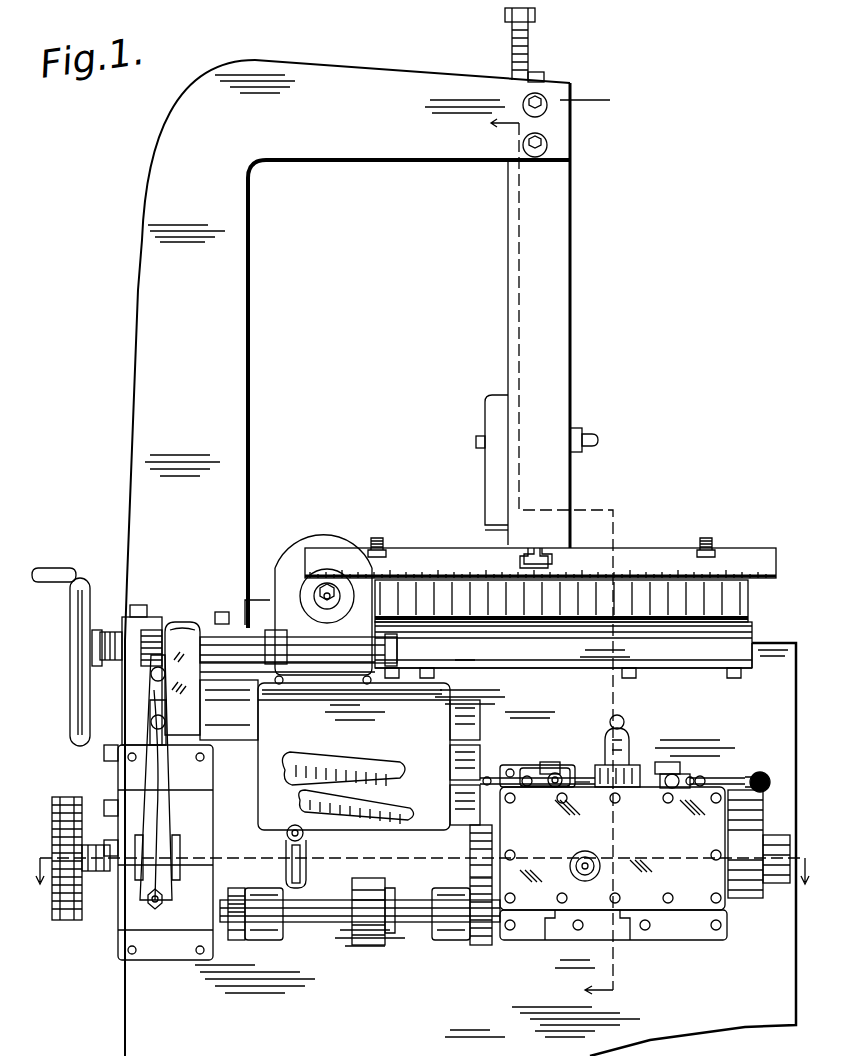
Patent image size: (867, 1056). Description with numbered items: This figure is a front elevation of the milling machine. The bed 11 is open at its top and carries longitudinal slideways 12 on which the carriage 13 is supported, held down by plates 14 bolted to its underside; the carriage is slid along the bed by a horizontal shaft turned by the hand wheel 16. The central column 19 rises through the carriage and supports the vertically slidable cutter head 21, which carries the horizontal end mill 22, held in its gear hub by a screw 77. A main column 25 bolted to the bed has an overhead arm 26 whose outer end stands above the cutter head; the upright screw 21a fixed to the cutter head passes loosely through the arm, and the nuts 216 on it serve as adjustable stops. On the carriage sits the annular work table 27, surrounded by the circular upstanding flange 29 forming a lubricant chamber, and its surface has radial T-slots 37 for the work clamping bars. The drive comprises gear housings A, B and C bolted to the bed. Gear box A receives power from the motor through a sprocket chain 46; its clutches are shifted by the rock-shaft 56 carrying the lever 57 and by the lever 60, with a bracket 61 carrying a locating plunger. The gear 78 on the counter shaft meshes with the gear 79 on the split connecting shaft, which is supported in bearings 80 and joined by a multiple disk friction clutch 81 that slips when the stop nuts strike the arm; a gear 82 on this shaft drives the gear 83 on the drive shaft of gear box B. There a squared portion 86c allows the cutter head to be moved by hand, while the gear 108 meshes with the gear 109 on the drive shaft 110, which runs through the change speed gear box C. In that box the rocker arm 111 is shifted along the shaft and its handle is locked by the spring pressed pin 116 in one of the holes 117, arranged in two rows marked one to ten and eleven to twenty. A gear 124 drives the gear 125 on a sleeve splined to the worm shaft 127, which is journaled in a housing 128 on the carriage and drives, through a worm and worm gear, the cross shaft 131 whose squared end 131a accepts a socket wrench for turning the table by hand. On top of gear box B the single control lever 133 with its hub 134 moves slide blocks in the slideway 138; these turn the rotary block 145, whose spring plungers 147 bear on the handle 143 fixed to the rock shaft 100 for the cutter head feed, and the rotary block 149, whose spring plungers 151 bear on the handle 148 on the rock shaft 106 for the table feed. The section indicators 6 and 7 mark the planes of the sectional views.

The section line 6- 6 is at (537, 558).
The section line 7- 7 is at (422, 884).
The bed 11 is at (760, 650).
The longitudinal slideways 12 is at (785, 640).
The carriage 13 is at (668, 648).
The plates 14 is at (695, 665).
The hand wheel 16 is at (72, 688).
The cutter head column 19 is at (555, 318).
The cutter head 21 is at (495, 482).
The upright screw 21a is at (510, 62).
The adjusting bolt 216 is at (538, 18).
The end mill 22 is at (600, 442).
The main column 25 is at (235, 430).
The overhead arm 26 is at (314, 150).
The annular work supporting table 27 is at (658, 558).
The circular upstanding flange 29 is at (430, 560).
The T-slots 37 is at (383, 555).
The sprocket chain 46 is at (72, 798).
The rock-shaft 56 is at (125, 935).
The operating lever 57 is at (150, 875).
The operating lever 60 is at (150, 708).
The bracket 61 is at (175, 835).
The screw 77 is at (476, 442).
The gear 78 is at (285, 828).
The gear 79 is at (236, 940).
The bearings 80 is at (275, 918).
The multiple disk friction clutch 81 is at (365, 945).
The gear 82 is at (478, 945).
The gear 83 is at (468, 868).
The squared portion 86c is at (570, 872).
The rock shaft 100 is at (555, 760).
The rock shaft 106 is at (675, 765).
The gear 108 is at (748, 898).
The gear 109 is at (770, 782).
The drive shaft 110 is at (530, 788).
The rocker arm 111 is at (310, 872).
The spring pressed pin 116 is at (310, 852).
The holes 117 is at (340, 785).
The gear 124 is at (150, 712).
The gear 125 is at (158, 625).
The worm shaft 127 is at (222, 645).
The housing 128 is at (400, 648).
The worm gear shaft 131 is at (325, 600).
The squared end 131a is at (330, 590).
The control lever 133 is at (610, 722).
The hub portion 134 is at (670, 760).
The horizontal slideway 138 is at (582, 790).
The operating handle 143 is at (490, 775).
The rotary block 145 is at (532, 768).
The spring plungers 147 is at (540, 785).
The operating handle 148 is at (758, 775).
The rotary block 149 is at (720, 776).
The spring plungers 151 is at (700, 790).
The gear box A is at (180, 905).
The gear box B is at (540, 910).
The change speed gear box C is at (435, 720).